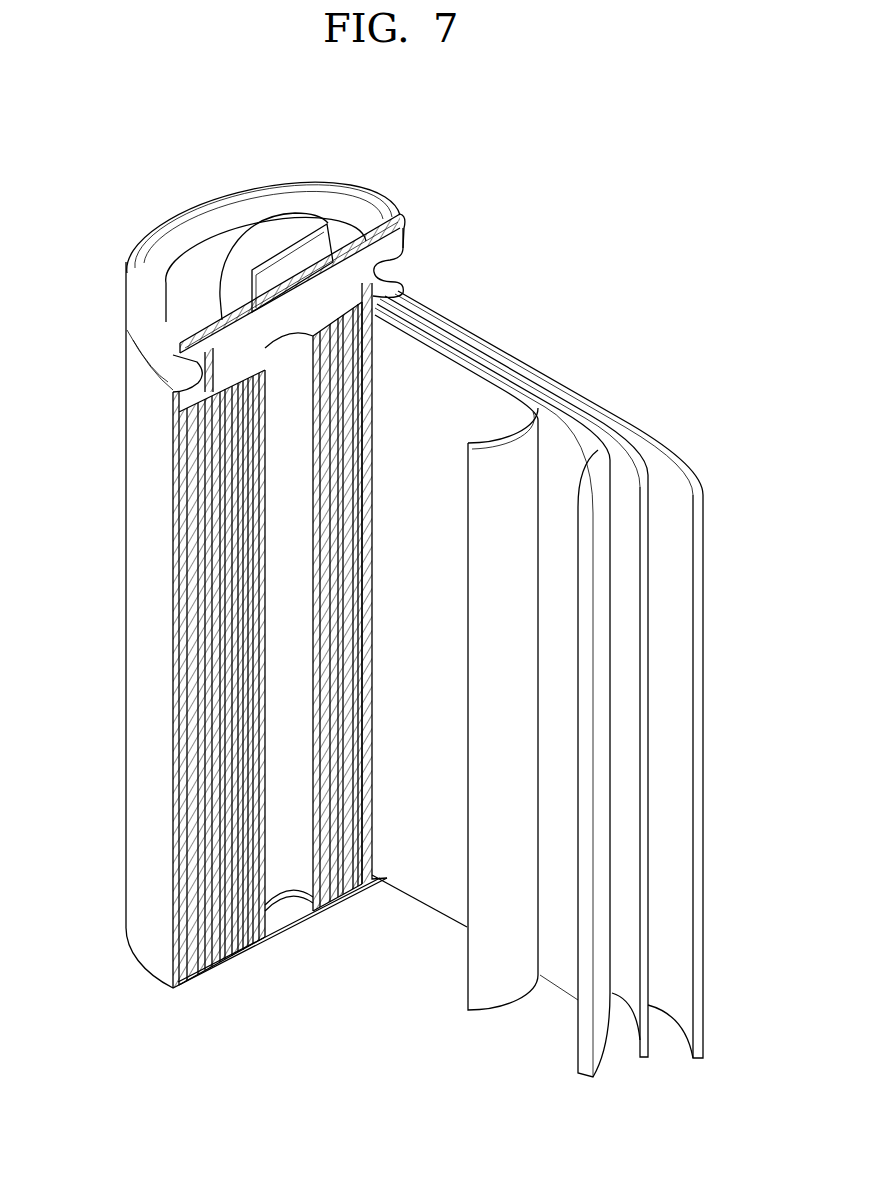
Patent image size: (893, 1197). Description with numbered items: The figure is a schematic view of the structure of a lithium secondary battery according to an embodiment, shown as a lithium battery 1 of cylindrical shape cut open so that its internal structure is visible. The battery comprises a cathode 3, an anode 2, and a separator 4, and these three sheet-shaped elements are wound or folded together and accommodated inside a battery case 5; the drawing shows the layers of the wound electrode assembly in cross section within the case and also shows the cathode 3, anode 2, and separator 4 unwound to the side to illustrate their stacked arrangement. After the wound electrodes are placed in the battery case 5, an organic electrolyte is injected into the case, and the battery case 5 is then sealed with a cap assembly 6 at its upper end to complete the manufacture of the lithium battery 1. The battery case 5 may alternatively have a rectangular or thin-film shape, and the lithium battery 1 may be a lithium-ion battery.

The lithium battery 1 is at (598, 212).
The anode 2 is at (687, 470).
The cathode 3 is at (567, 422).
The separator 4 is at (503, 447).
The battery case 5 is at (138, 637).
The cap assembly 6 is at (258, 230).